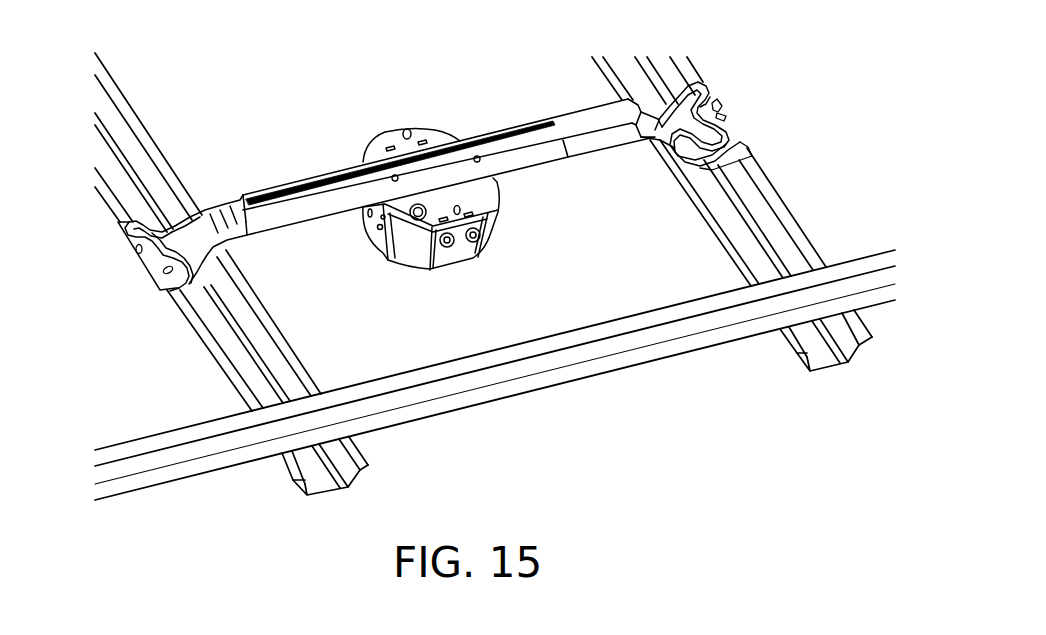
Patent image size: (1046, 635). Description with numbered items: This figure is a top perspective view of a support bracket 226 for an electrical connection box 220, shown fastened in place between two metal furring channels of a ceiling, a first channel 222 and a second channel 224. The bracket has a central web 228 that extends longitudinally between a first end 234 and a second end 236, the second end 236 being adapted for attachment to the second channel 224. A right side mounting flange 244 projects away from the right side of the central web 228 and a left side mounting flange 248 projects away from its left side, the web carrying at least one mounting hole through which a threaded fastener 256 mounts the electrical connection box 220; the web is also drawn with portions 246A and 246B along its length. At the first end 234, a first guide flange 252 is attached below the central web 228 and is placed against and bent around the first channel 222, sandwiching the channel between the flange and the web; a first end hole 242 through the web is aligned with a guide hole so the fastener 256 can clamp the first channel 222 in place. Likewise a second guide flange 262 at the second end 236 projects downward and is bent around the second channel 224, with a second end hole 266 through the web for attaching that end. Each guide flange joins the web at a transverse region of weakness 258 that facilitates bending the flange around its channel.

The electrical connection box 220 is at (410, 250).
The first channel 222 is at (243, 368).
The second channel 224 is at (775, 237).
The support bracket 226 is at (526, 236).
The central web 228 is at (195, 225).
The first end 234 is at (124, 235).
The second end 236 is at (700, 82).
The first end hole 242 is at (135, 243).
The right side mounting flange 244 is at (530, 176).
The first bar segment 246A is at (597, 145).
The second bar segment 246B is at (528, 163).
The left side mounting flange 248 is at (292, 180).
The first guide flange 252 is at (148, 272).
The threaded fastener 256 is at (395, 175).
The region of weakness 258 is at (145, 266).
The second guide flange 262 is at (710, 95).
The second end hole 266 is at (728, 115).